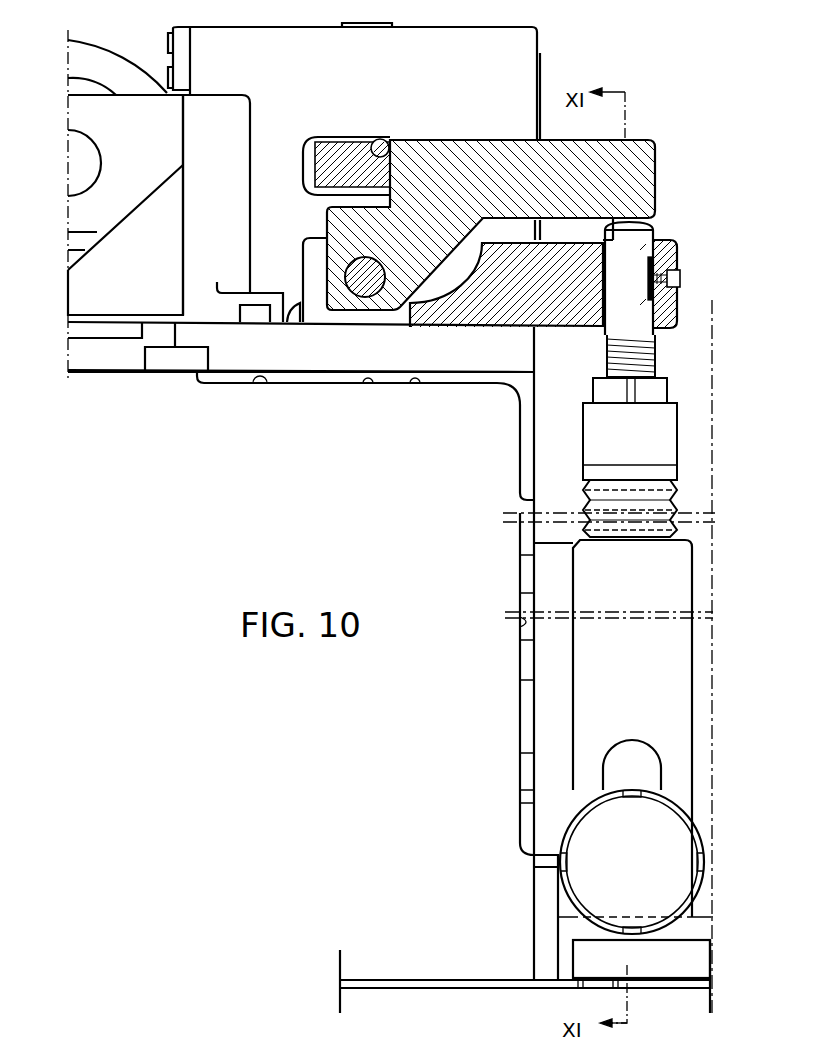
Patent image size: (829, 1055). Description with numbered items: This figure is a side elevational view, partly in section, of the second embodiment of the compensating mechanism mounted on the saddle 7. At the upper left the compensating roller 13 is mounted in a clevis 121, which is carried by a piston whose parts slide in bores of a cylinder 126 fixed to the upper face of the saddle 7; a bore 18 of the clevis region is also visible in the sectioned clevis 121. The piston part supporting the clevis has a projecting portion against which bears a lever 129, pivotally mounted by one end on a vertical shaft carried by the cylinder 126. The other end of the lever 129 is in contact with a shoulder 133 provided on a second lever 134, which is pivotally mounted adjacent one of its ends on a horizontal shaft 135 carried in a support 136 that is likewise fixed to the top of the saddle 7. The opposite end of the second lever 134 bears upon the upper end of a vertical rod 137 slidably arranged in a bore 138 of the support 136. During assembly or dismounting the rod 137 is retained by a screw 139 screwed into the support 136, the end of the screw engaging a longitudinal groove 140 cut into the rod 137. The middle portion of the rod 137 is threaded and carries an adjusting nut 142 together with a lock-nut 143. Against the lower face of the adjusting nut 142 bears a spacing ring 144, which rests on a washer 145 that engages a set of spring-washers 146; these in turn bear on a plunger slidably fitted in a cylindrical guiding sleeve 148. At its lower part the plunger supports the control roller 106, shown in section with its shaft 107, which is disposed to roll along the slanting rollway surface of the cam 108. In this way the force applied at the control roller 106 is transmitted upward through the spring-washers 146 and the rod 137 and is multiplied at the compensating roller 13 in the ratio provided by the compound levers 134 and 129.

The saddle 7 is at (251, 365).
The compensating roller 13 is at (99, 48).
The spindle bore 18 is at (88, 171).
The clevis 121 is at (132, 131).
The cylinder 126 is at (131, 304).
The lever 129 is at (349, 146).
The shoulder 133 is at (379, 142).
The second lever 134 is at (646, 187).
The horizontal shaft 135 is at (360, 274).
The support 136 is at (443, 320).
The vertical rod 137 is at (654, 338).
The bore 138 is at (612, 253).
The screw 139 is at (680, 277).
The longitudinal groove 140 is at (650, 270).
The adjusting nut 142 is at (664, 401).
The lock-nut 143 is at (666, 385).
The spacing ring 144 is at (615, 448).
The washer 145 is at (597, 472).
The spring-washers 146 is at (590, 509).
The cylindrical guiding sleeve 148 is at (629, 691).
The control roller 106 is at (568, 823).
The shaft 107 is at (635, 874).
The cam 108 is at (656, 976).